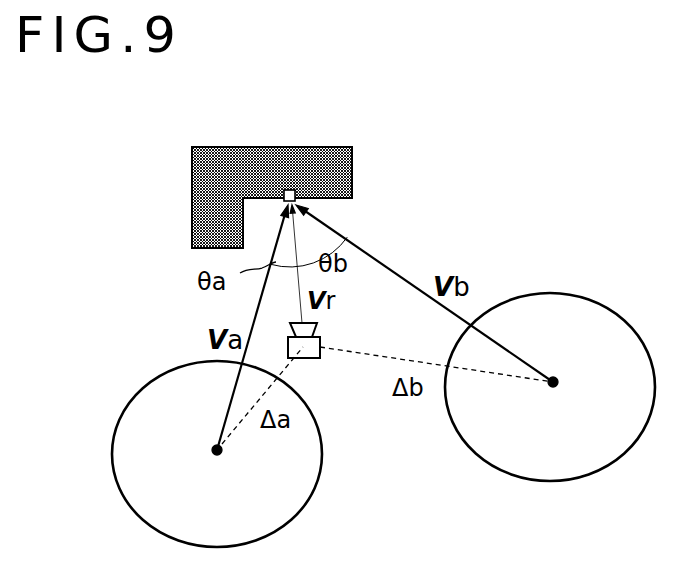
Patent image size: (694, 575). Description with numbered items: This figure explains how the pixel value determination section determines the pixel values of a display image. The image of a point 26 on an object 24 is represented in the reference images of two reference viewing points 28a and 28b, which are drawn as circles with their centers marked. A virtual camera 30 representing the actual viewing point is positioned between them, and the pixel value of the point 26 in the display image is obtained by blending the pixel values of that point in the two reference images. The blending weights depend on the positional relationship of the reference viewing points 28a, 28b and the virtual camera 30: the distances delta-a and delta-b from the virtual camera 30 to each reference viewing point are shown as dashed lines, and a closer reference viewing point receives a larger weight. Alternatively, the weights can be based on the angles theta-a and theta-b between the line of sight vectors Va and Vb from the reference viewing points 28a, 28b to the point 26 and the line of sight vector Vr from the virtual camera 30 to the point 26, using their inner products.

The object 24 is at (316, 147).
The point 26 is at (298, 203).
The reference viewing point 28a is at (212, 452).
The reference viewing point 28b is at (553, 388).
The virtual camera 30 is at (318, 332).